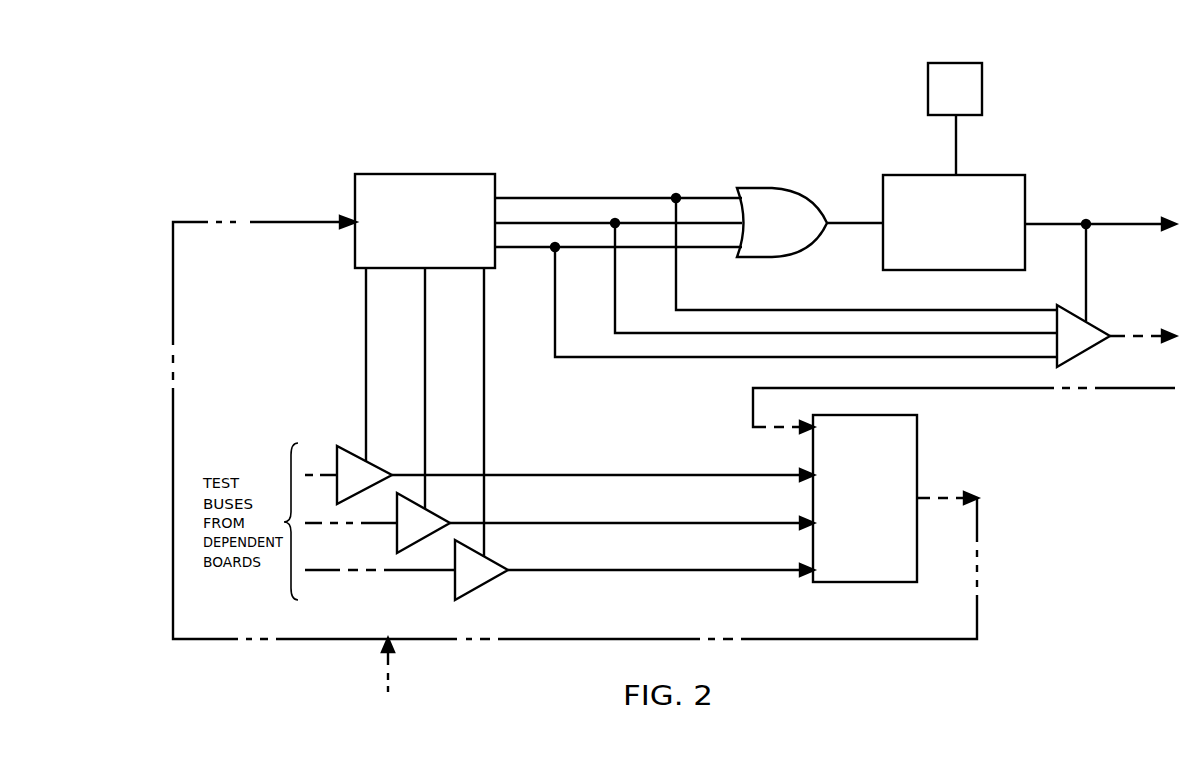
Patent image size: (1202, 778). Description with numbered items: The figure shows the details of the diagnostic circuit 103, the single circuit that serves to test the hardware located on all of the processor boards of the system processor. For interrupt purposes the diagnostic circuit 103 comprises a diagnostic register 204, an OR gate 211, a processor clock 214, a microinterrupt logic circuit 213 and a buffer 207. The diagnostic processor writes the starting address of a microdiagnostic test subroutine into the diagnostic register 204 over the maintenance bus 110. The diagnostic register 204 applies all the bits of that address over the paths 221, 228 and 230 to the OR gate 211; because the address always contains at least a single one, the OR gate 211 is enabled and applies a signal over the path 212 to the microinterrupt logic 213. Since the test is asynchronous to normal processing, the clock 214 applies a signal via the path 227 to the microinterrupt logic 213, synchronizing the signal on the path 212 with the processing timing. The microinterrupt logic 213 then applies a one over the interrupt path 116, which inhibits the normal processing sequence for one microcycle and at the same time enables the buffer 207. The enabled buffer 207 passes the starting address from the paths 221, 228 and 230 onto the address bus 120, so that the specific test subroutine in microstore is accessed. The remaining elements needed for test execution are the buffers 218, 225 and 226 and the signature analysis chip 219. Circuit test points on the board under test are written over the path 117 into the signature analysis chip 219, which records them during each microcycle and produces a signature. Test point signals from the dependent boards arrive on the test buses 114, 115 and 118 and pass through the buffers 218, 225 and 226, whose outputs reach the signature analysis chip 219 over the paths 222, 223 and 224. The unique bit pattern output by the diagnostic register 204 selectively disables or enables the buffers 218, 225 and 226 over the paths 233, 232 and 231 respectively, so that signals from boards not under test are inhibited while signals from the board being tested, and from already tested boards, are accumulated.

The diagnostic circuit 103 is at (356, 98).
The maintenance bus 110 is at (388, 663).
The diagnostic register 204 is at (443, 174).
The path 230 is at (545, 198).
The path 228 is at (545, 223).
The path 221 is at (563, 247).
The OR gate 211 is at (805, 197).
The path 212 is at (855, 227).
The microinterrupt logic circuit 213 is at (981, 272).
The processor clock 214 is at (982, 92).
The path 227 is at (956, 152).
The interrupt path 116 is at (1112, 226).
The buffer 207 is at (1090, 320).
The address bus 120 is at (1116, 340).
The test bus 117 is at (1118, 390).
The signature analysis chip 219 is at (870, 583).
The test bus line to SAC 222 is at (698, 475).
The test bus line to SAC 223 is at (698, 523).
The test bus line to SAC 224 is at (698, 570).
The buffer 218 is at (375, 458).
The buffer 225 is at (432, 508).
The buffer 226 is at (494, 560).
The test bus 114 is at (324, 472).
The test bus 115 is at (326, 520).
The test bus 118 is at (328, 568).
The path 231 is at (484, 450).
The path 232 is at (425, 416).
The path 233 is at (366, 388).